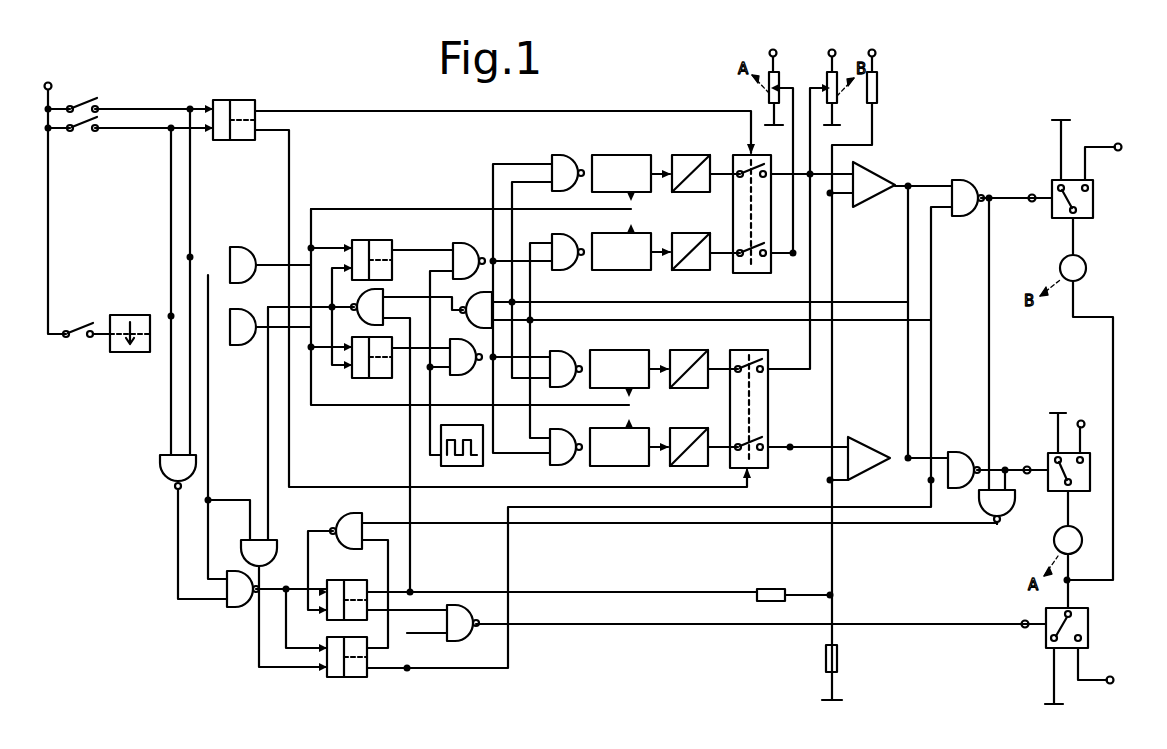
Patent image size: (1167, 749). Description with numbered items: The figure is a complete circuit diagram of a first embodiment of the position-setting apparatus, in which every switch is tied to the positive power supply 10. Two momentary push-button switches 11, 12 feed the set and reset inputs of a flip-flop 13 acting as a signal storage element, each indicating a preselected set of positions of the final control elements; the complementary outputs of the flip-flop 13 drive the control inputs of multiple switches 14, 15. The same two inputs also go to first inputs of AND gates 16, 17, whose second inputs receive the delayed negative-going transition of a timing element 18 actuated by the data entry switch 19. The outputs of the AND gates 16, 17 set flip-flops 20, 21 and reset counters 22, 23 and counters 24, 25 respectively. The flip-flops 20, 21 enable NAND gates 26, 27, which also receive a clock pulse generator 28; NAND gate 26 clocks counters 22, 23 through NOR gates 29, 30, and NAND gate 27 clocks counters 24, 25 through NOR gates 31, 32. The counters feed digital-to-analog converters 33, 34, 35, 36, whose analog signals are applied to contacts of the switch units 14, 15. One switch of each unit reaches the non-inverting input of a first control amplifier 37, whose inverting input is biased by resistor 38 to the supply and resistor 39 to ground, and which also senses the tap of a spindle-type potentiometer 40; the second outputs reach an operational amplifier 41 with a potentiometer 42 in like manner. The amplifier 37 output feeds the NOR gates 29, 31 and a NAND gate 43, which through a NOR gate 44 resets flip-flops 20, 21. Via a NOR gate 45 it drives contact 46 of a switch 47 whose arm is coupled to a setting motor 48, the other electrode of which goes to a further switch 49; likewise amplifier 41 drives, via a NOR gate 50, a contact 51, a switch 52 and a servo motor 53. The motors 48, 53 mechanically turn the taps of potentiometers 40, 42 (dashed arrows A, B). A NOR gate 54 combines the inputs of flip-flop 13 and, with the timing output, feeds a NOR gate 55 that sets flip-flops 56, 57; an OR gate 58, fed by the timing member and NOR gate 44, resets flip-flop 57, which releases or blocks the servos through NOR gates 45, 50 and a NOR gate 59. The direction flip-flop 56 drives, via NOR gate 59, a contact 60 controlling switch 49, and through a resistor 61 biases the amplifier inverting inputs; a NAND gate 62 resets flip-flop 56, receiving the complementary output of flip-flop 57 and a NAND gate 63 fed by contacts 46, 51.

The power supply 10 is at (48, 84).
The momentary push-button switch 11 is at (89, 98).
The momentary push-button switch 12 is at (84, 128).
The flip-flop 13 is at (238, 100).
The multiple switch 14 is at (744, 272).
The multiple switch 15 is at (746, 352).
The AND gate 16 is at (240, 260).
The AND gate 17 is at (240, 346).
The timing element 18 is at (135, 357).
The data entry switch 19 is at (72, 342).
The flip-flop 20 is at (378, 248).
The flip-flop 21 is at (377, 370).
The counter 22 is at (608, 164).
The counter 23 is at (620, 270).
The counter 24 is at (614, 356).
The counter 25 is at (638, 436).
The NAND gate 26 is at (462, 252).
The NAND gate 27 is at (462, 378).
The clock pulse generator 28 is at (478, 464).
The NOR gate 29 is at (560, 156).
The NOR gate 30 is at (560, 270).
The NOR gate 31 is at (556, 352).
The NOR gate 32 is at (560, 462).
The digital-to-analog converter 33 is at (686, 158).
The digital-to-analog converter 34 is at (684, 270).
The digital-to-analog converter 35 is at (686, 354).
The digital-to-analog converter 36 is at (686, 432).
The first control amplifier 37 is at (878, 180).
The resistor 38 is at (878, 88).
The resistor 39 is at (837, 654).
The potentiometer 40 is at (836, 98).
The operational amplifier 41 is at (864, 454).
The potentiometer 42 is at (768, 92).
The NAND gate 43 is at (474, 308).
The NOR gate 44 is at (374, 300).
The NOR gate 45 is at (958, 190).
The contact 46 is at (1034, 194).
The switch 47 is at (1096, 198).
The setting motor 48 is at (1086, 256).
The switch 49 is at (1088, 628).
The NOR gate 50 is at (946, 460).
The contact 51 is at (1030, 466).
The switch 52 is at (1056, 488).
The servo motor 53 is at (1054, 540).
The NOR gate 54 is at (160, 470).
The NOR gate 55 is at (224, 608).
The flip-flop 56 is at (350, 588).
The flip-flop 57 is at (356, 676).
The OR gate 58 is at (274, 544).
The NOR gate 59 is at (466, 636).
The contact 60 is at (1024, 620).
The resistor 61 is at (766, 590).
The NAND gate 62 is at (353, 520).
The NAND gate 63 is at (982, 504).